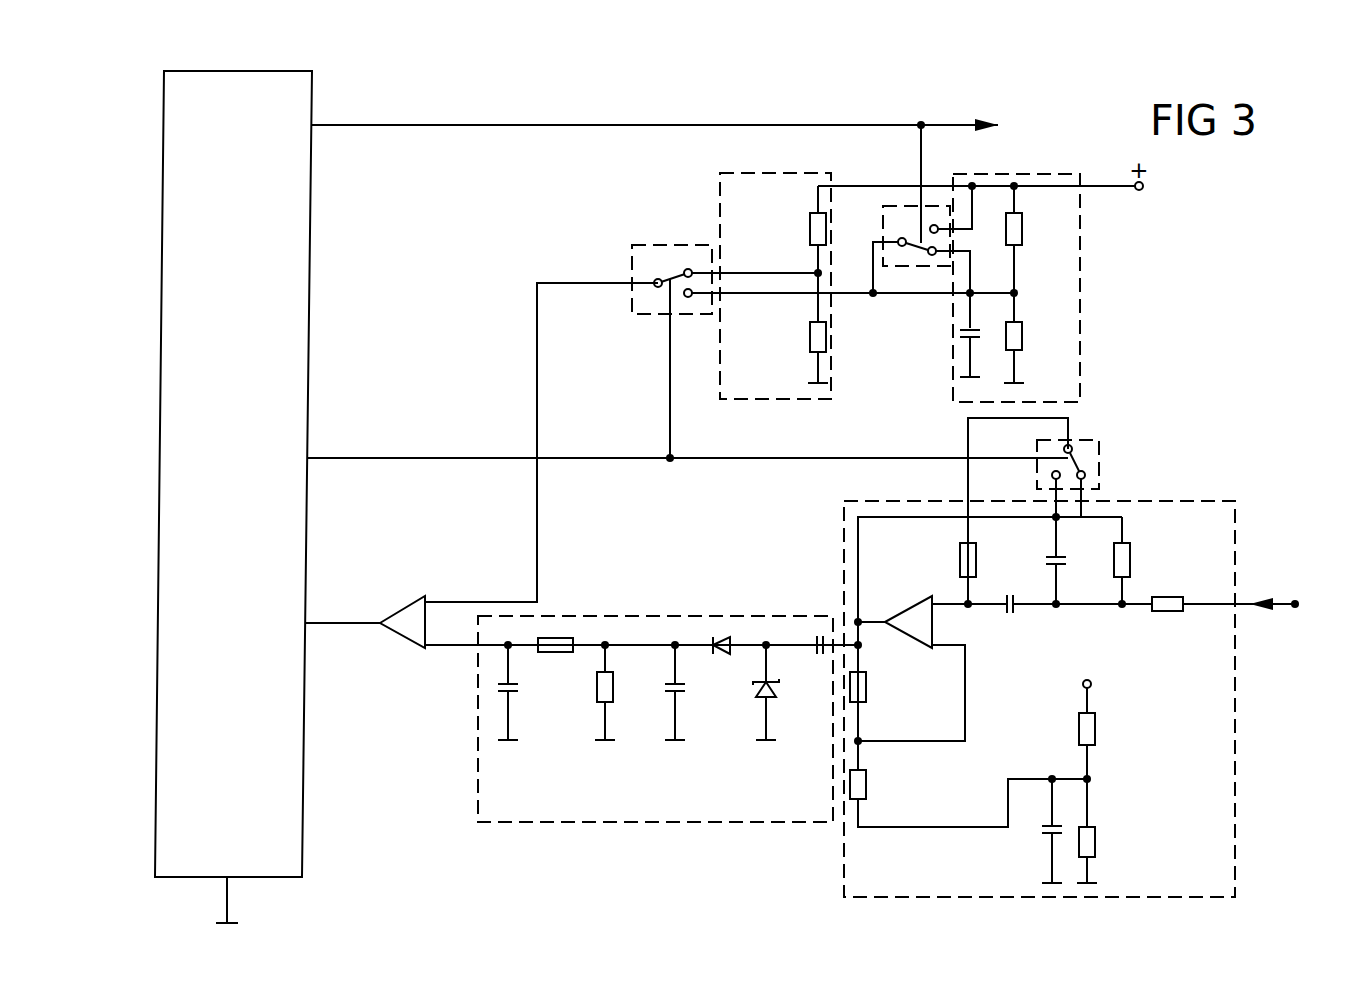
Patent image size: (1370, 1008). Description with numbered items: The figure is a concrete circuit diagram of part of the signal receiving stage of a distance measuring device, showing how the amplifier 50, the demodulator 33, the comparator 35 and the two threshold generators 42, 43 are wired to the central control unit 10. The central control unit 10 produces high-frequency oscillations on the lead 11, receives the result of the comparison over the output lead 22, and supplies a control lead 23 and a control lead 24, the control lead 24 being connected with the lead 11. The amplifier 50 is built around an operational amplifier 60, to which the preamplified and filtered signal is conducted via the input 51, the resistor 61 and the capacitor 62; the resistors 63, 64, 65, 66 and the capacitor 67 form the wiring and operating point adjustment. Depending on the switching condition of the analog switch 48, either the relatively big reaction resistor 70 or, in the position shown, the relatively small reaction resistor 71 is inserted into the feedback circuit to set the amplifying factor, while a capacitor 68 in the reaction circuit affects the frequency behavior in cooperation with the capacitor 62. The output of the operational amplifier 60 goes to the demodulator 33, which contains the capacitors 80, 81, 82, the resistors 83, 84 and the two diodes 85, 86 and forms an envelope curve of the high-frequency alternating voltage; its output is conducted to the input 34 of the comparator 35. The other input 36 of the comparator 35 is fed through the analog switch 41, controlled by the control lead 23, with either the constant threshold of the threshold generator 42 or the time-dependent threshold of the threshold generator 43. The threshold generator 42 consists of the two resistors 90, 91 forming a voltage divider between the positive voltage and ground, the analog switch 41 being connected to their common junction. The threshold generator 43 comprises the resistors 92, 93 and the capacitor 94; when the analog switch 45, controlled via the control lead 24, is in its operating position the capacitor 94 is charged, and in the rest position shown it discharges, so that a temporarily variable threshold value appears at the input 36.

The central control unit 10 is at (247, 376).
The lead 11 is at (408, 125).
The output lead 22 is at (333, 623).
The control lead 23 is at (400, 458).
The control lead 24 is at (925, 150).
The demodulator 33 is at (655, 715).
The input of comparator 34 is at (428, 648).
The comparator 35 is at (408, 630).
The input of comparator 36 is at (428, 597).
The analog switch 41 is at (642, 312).
The first threshold generator 42 is at (788, 314).
The second threshold generator 43 is at (979, 290).
The analog switch 45 is at (900, 215).
The analog switch 48 is at (1100, 455).
The amplifier 50 is at (1079, 699).
The input of amplifier 51 is at (1295, 610).
The operational amplifier 60 is at (935, 622).
The resistor 61 is at (1168, 611).
The capacitor 62 is at (1012, 612).
The resistor 63 is at (1097, 730).
The resistor 64 is at (1097, 840).
The resistor 65 is at (866, 785).
The resistor 66 is at (866, 690).
The capacitor 67 is at (1042, 830).
The capacitor 68 is at (1046, 560).
The reaction resistor 70 is at (960, 560).
The reaction resistor 71 is at (1130, 560).
The capacitor 80 is at (817, 636).
The capacitor 81 is at (517, 687).
The capacitor 82 is at (686, 687).
The resistor 83 is at (555, 637).
The resistor 84 is at (612, 687).
The diode 85 is at (715, 636).
The diode 86 is at (775, 690).
The resistor 90 is at (780, 352).
The resistor 91 is at (812, 225).
The resistor 92 is at (1022, 228).
The resistor 93 is at (1022, 335).
The capacitor 94 is at (980, 335).